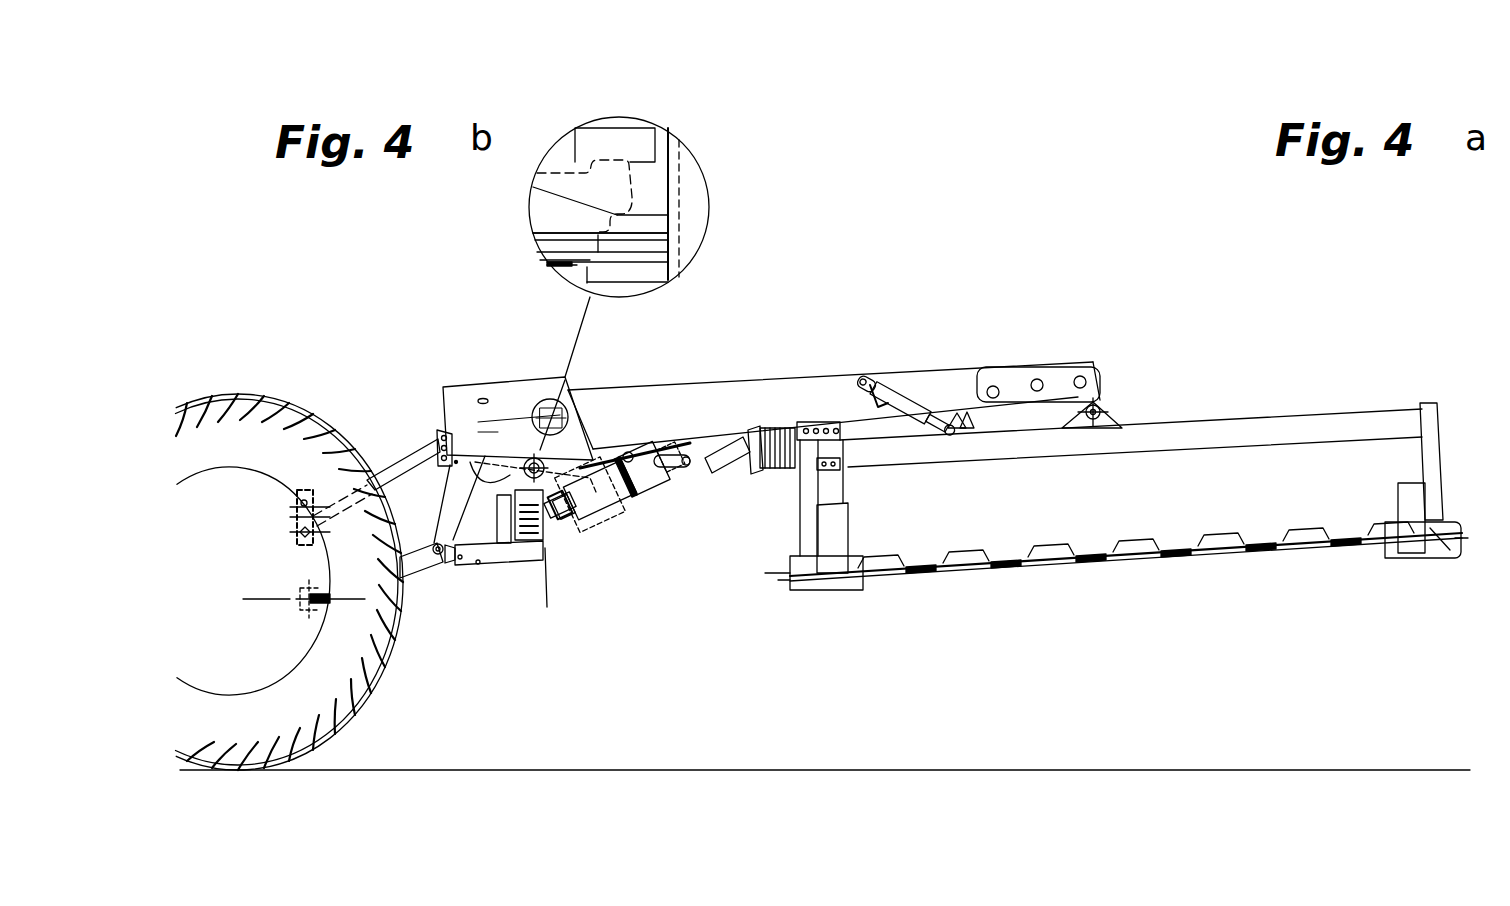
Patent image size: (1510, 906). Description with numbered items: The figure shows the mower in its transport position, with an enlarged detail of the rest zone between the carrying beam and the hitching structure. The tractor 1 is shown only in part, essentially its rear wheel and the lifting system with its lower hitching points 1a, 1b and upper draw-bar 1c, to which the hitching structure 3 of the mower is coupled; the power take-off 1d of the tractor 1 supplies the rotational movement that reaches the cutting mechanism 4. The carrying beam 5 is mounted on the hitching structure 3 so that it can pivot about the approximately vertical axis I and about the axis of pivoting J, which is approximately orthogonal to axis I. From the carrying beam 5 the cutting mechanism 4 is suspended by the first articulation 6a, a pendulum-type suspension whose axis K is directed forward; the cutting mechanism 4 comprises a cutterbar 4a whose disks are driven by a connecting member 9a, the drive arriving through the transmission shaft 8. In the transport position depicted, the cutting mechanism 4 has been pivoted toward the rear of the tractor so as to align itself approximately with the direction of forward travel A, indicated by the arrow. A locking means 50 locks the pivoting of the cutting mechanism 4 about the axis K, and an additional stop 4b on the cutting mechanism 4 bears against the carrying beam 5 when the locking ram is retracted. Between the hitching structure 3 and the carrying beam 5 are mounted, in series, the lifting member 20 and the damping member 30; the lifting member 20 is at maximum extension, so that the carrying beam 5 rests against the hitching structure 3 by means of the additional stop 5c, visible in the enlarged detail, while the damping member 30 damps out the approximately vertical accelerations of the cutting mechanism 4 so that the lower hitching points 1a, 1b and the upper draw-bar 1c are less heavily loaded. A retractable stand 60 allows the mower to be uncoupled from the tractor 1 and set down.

In FIG. 4A, the tractor 1 is at (271, 382).
In FIG. 4A, the lower hitching point 1a is at (446, 570).
In FIG. 4A, the lower hitching point 1b is at (499, 634).
In FIG. 4A, the upper draw-bar 1c is at (413, 450).
In FIG. 4A, the power take-off 1d is at (325, 614).
In FIG. 4B, the hitching structure 3 is at (550, 212).
In FIG. 4A, the cutting mechanism 4 is at (1283, 404).
In FIG. 4A, the cutterbar 4a is at (1175, 560).
In FIG. 4A, the additional stop 4b is at (1000, 438).
In FIG. 4A, the carrying beam 5 is at (722, 382).
In FIG. 4B, the carrying beam 5 is at (697, 195).
In FIG. 4B, the additional stop 5c is at (670, 247).
In FIG. 4A, the first articulation 6a is at (1118, 392).
In FIG. 4A, the transmission shaft 8 is at (727, 472).
In FIG. 4A, the connecting member 9a is at (850, 528).
In FIG. 4A, the lifting member 20 is at (604, 527).
In FIG. 4A, the damping member 30 is at (652, 503).
In FIG. 4A, the locking means 50 is at (921, 385).
In FIG. 4A, the retractable stand 60 is at (510, 557).
In FIG. 4A, the approximately vertical axis I is at (529, 452).
In FIG. 4A, the axis of pivoting J is at (548, 460).
In FIG. 4A, the axis of the first articulation K is at (1108, 402).
In FIG. 4A, the direction of forward travel A is at (944, 195).